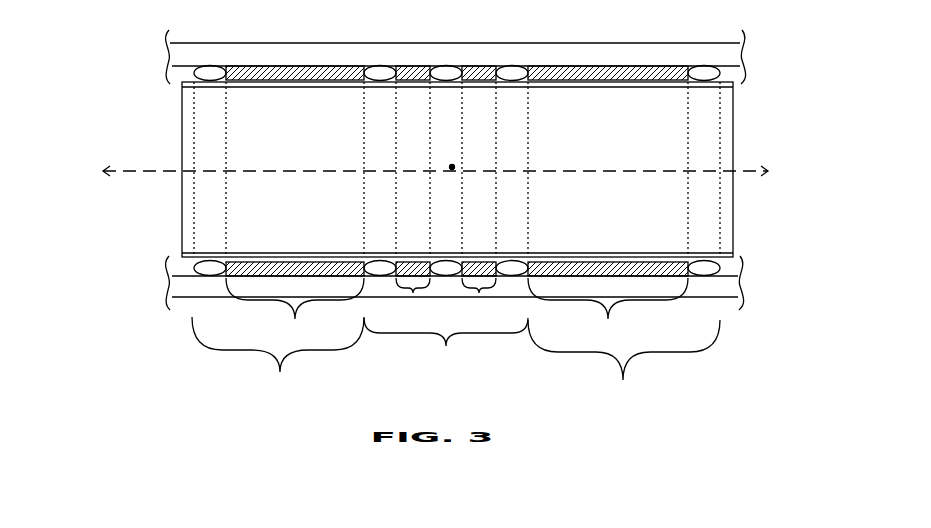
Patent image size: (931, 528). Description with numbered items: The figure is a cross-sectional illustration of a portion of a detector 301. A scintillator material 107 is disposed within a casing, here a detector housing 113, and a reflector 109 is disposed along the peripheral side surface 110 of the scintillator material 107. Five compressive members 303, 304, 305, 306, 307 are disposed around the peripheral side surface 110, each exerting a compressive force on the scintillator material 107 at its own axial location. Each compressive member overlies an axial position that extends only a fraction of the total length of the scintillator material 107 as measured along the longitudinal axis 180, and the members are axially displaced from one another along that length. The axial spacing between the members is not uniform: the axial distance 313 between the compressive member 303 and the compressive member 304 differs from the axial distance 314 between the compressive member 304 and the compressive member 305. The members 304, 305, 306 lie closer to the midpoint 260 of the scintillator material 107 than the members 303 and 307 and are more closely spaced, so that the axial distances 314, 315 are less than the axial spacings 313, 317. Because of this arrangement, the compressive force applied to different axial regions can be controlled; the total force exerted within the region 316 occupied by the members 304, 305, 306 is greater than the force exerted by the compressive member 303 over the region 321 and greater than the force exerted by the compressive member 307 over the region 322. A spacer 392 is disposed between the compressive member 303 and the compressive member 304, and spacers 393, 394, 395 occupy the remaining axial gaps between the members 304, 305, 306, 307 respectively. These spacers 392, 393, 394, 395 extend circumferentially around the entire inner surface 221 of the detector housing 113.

The detector 301 is at (59, 20).
The detector housing 113 is at (720, 58).
The inner surface 221 is at (733, 300).
The scintillator material 107 is at (457, 169).
The reflector 109 is at (258, 87).
The peripheral side surface 110 is at (567, 88).
The longitudinal axis 180 is at (752, 171).
The midpoint 260 is at (452, 167).
The compressive member 303 is at (207, 72).
The compressive member 304 is at (387, 72).
The compressive member 305 is at (443, 72).
The compressive member 306 is at (510, 72).
The compressive member 307 is at (707, 72).
The spacer 392 is at (238, 270).
The spacer 393 is at (397, 270).
The spacer 394 is at (490, 270).
The spacer 395 is at (573, 270).
The axial distance 313 is at (295, 309).
The axial distance 314 is at (413, 296).
The axial distance 315 is at (479, 296).
The region 316 is at (446, 342).
The axial spacing 317 is at (608, 309).
The region 321 is at (278, 357).
The region 322 is at (624, 362).